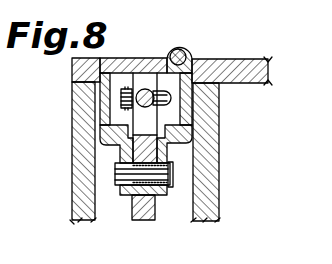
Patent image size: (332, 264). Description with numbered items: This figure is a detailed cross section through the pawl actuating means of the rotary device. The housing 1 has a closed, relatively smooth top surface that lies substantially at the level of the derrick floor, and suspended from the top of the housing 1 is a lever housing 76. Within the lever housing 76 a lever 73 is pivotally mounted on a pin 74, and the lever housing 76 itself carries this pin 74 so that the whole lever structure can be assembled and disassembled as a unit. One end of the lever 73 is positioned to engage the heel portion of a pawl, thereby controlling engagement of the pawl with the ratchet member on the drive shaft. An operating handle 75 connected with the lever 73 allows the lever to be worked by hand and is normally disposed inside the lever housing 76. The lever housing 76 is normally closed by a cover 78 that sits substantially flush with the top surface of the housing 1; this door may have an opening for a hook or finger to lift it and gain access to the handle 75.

The housing 1 is at (72, 194).
The lever 73 is at (147, 220).
The pin 74 is at (116, 181).
The operating handle 75 is at (162, 106).
The lever housing 76 is at (100, 129).
The cover 78 is at (133, 58).